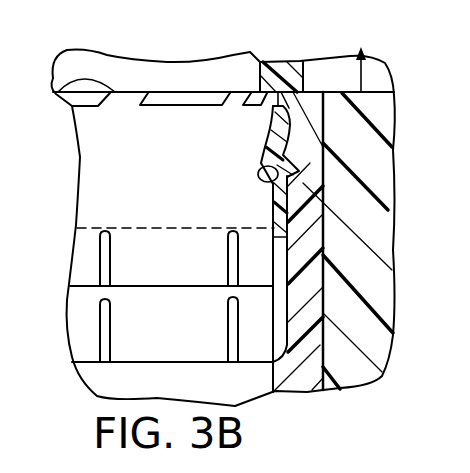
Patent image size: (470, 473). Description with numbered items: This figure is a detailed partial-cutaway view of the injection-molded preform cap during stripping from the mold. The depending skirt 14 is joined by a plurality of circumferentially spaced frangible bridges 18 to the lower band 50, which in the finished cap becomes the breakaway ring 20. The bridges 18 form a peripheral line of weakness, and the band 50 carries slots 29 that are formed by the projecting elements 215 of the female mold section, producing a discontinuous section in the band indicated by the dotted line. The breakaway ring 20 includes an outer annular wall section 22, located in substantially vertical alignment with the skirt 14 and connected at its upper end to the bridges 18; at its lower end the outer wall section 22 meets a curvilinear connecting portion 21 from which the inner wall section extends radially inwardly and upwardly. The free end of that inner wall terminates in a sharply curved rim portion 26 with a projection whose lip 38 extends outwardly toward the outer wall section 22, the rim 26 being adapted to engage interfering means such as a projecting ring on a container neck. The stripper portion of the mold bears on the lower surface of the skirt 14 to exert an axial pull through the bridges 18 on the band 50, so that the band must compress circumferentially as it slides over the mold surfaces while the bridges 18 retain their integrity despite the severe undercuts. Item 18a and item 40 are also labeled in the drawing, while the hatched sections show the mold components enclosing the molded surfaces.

The depending skirt 14 is at (303, 83).
The frangible bridges 18 is at (137, 95).
The slot in top plate 18a is at (57, 93).
The breakaway ring 20 is at (392, 220).
The curvilinear connecting portion 21 is at (272, 181).
The outer annular wall section 22 is at (366, 133).
The curvilinear rim portion 26 is at (325, 280).
The slots 29 is at (100, 247).
The lip 38 is at (88, 278).
The upper channel with ribs 40 is at (150, 272).
The band 50 is at (105, 142).
The projecting elements 215 is at (100, 325).